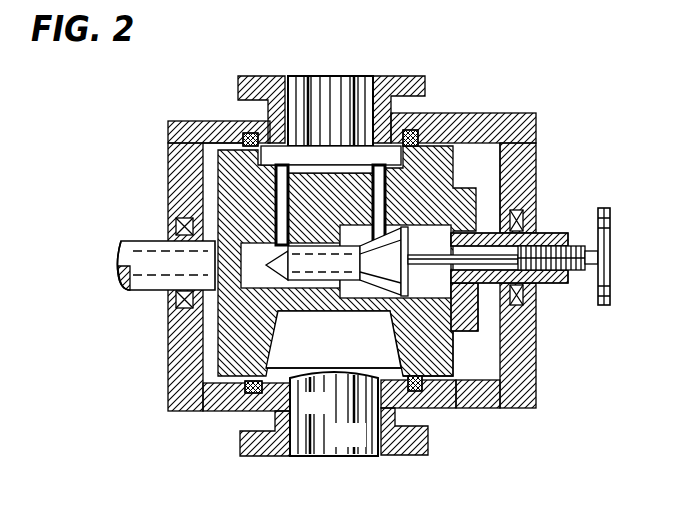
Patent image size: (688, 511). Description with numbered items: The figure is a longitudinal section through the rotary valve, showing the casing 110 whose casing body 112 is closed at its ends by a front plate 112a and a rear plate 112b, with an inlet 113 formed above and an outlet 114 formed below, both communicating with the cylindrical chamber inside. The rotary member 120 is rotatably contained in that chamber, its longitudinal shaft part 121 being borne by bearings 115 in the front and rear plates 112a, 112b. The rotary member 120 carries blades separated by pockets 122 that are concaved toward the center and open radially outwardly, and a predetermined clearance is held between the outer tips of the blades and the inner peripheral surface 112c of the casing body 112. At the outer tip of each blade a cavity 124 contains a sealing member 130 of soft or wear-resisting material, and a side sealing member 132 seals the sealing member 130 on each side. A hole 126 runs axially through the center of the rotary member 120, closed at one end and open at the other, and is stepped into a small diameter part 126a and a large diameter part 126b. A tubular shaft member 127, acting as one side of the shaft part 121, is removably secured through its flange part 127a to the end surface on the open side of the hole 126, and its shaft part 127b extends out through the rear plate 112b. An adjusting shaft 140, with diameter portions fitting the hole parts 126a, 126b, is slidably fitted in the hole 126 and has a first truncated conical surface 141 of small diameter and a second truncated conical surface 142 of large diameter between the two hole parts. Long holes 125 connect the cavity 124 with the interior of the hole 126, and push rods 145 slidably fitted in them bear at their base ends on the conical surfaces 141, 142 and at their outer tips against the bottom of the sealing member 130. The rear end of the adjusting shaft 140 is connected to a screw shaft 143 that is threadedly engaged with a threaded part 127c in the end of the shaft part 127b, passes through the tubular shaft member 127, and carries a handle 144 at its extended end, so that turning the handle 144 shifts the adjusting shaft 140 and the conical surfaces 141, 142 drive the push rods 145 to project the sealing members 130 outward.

The casing 110 is at (167, 128).
The casing body 112 is at (453, 105).
The front plate 112a is at (170, 157).
The rear plate 112b is at (528, 112).
The inner peripheral surface 112c is at (233, 135).
The inlet 113 is at (347, 80).
The outlet 114 is at (307, 450).
The bearings 115 is at (165, 218).
The rotary member 120 is at (227, 303).
The longitudinal shaft part 121 is at (117, 257).
The pockets 122 is at (333, 345).
The cavity 124 is at (300, 160).
The long holes 125 is at (268, 210).
The hole 126 is at (364, 290).
The small diameter part 126a is at (247, 277).
The large diameter part 126b is at (476, 300).
The tubular shaft member 127 is at (503, 267).
The flange part 127a is at (496, 360).
The shaft part 127b is at (543, 275).
The threaded part 127c is at (538, 227).
The sealing member 130 is at (283, 145).
The side sealing member 132 is at (222, 145).
The adjusting shaft 140 is at (316, 266).
The first truncated conical surface 141 is at (282, 276).
The second truncated conical surface 142 is at (447, 370).
The screw shaft 143 is at (478, 247).
The handle 144 is at (612, 211).
The push rods 145 is at (268, 184).